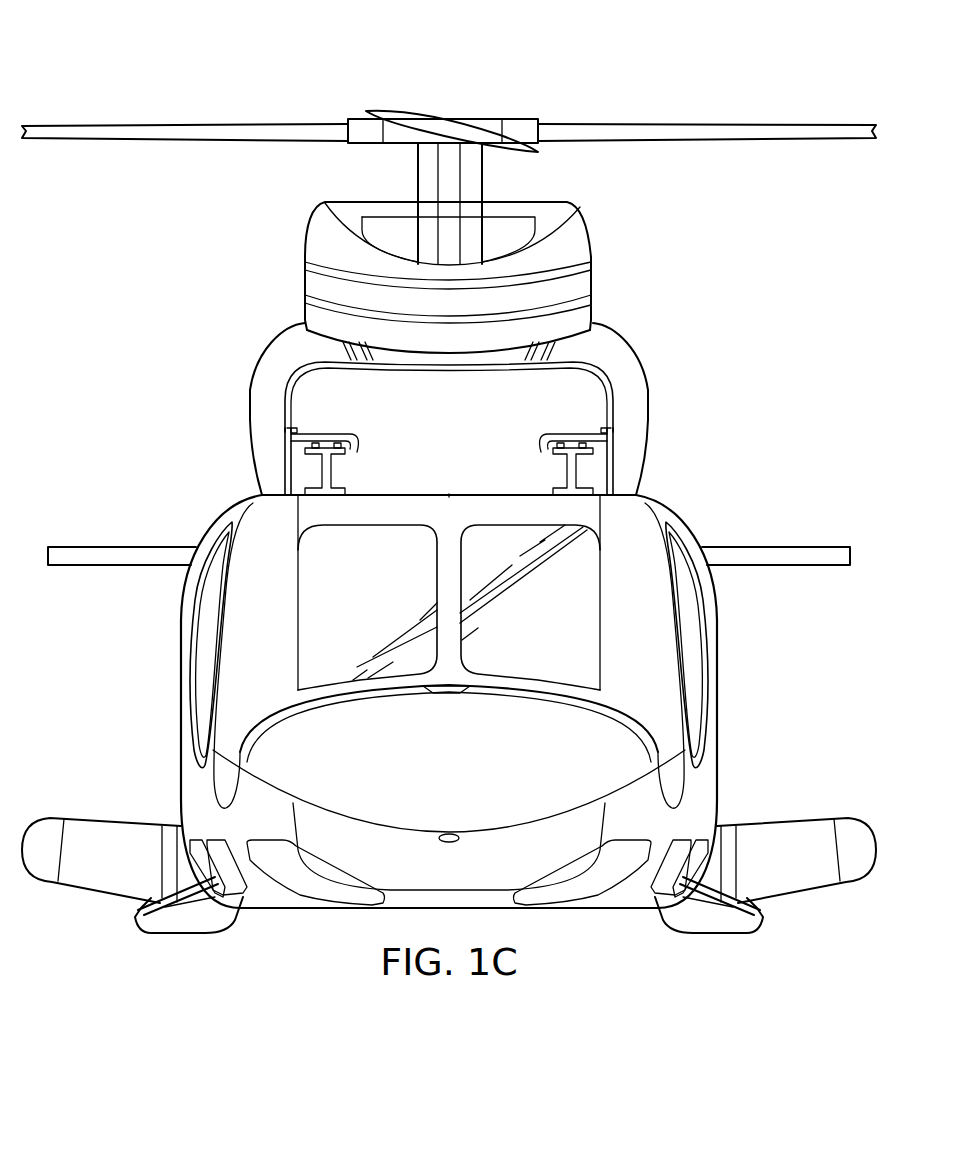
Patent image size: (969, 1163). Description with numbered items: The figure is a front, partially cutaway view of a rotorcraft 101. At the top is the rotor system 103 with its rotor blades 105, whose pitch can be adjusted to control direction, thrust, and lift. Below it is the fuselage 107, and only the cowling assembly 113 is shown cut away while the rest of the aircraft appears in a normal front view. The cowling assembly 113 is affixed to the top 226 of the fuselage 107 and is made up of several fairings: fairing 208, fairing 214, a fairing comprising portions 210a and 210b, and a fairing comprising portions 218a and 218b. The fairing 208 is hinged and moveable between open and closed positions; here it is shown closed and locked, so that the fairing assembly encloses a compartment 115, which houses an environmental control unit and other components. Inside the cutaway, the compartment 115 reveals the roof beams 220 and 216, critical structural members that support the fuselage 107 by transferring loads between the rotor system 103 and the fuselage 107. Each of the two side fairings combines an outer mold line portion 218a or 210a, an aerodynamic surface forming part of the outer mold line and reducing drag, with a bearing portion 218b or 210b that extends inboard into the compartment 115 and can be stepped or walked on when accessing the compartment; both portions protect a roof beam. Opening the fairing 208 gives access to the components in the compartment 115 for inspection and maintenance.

The rotorcraft 101 is at (138, 347).
The rotor system 103 is at (355, 75).
The rotor blade 105 is at (722, 125).
The fuselage 107 is at (252, 512).
The cowling assembly 113 is at (610, 352).
The compartment 115 is at (298, 410).
The fairing 208 is at (308, 368).
The fairing 214 is at (634, 388).
The outer mold line portion 218a is at (283, 468).
The bearing portion 218b is at (329, 434).
The roof beam 220 is at (346, 485).
The outer mold line portion 210a is at (614, 468).
The bearing portion 210b is at (569, 434).
The roof beam 216 is at (552, 485).
The top section of the fuselage 226 is at (449, 494).